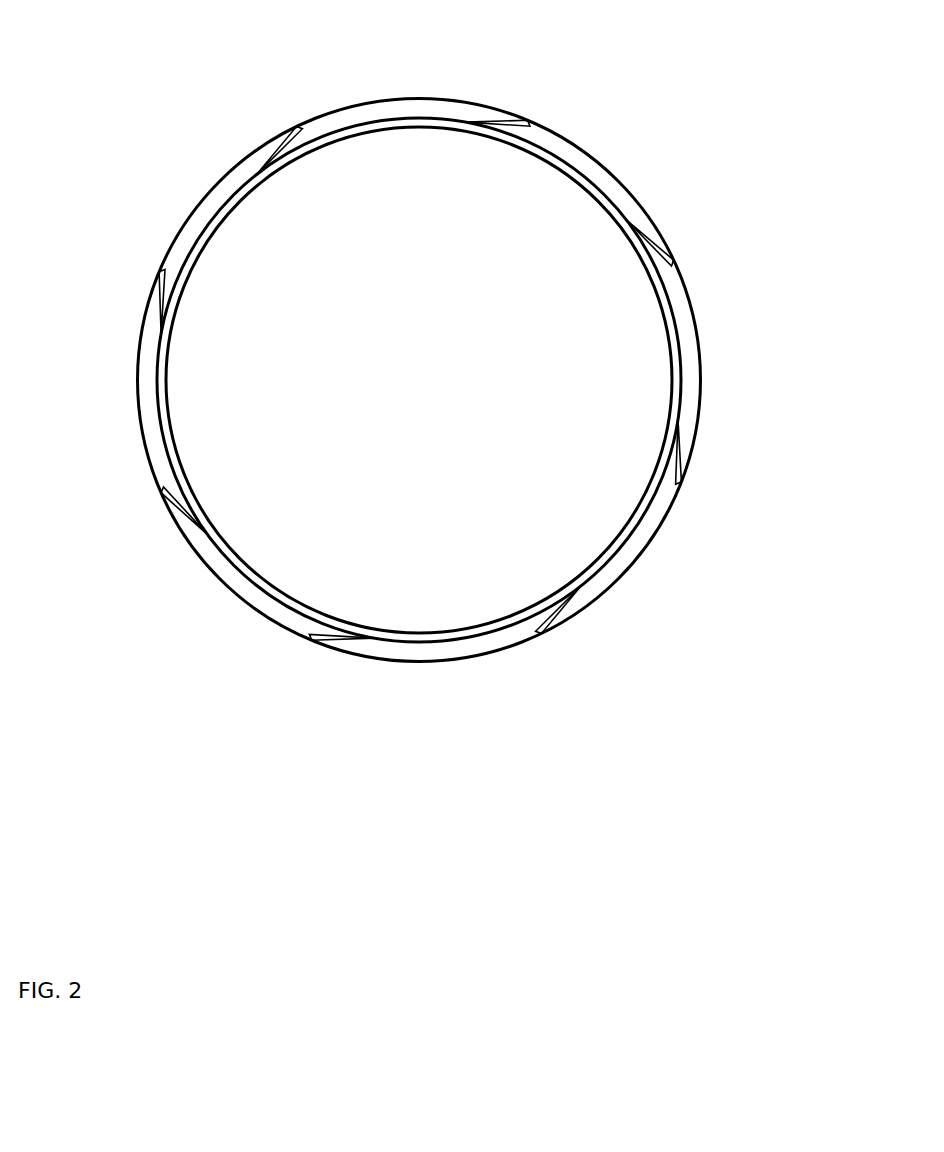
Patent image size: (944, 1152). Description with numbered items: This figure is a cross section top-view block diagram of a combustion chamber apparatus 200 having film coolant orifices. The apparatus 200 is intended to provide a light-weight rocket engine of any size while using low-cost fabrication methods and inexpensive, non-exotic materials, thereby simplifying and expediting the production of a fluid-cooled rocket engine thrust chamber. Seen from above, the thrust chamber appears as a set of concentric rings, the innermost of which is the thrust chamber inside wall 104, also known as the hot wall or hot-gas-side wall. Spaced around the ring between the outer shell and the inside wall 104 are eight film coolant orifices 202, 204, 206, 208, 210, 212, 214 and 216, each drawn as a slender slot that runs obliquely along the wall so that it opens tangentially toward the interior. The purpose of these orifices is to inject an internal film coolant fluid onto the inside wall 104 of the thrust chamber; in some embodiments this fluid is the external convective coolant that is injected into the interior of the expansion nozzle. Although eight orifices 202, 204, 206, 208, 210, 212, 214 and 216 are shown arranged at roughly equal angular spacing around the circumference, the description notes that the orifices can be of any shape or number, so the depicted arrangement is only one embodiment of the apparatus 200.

The inside wall 104 is at (673, 352).
The combustion chamber apparatus 200 is at (682, 932).
The film coolant orifice 202 is at (529, 123).
The film coolant orifice 204 is at (673, 262).
The film coolant orifice 206 is at (745, 580).
The film coolant orifice 208 is at (648, 725).
The film coolant orifice 210 is at (223, 732).
The film coolant orifice 212 is at (95, 591).
The film coolant orifice 214 is at (162, 273).
The film coolant orifice 216 is at (298, 127).